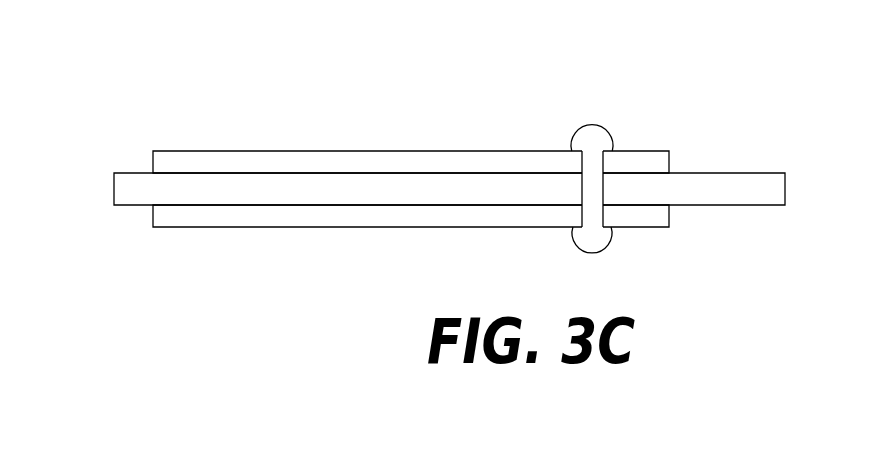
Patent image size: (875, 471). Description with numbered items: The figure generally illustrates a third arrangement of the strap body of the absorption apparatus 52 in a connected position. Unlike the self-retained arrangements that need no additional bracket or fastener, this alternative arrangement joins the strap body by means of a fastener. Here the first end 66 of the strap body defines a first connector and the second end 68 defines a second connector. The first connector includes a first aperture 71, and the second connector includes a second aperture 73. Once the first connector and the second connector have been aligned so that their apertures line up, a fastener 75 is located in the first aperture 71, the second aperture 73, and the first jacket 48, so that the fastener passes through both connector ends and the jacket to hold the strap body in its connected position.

The first jacket 48 is at (796, 194).
The absorption apparatus 52 is at (486, 155).
The first end 66 is at (669, 227).
The second end 68 is at (648, 152).
The first aperture 71 is at (583, 163).
The second aperture 73 is at (603, 210).
The fastener 75 is at (590, 122).